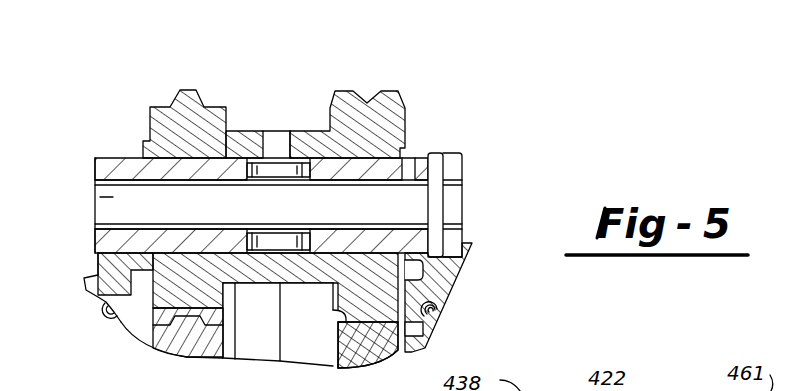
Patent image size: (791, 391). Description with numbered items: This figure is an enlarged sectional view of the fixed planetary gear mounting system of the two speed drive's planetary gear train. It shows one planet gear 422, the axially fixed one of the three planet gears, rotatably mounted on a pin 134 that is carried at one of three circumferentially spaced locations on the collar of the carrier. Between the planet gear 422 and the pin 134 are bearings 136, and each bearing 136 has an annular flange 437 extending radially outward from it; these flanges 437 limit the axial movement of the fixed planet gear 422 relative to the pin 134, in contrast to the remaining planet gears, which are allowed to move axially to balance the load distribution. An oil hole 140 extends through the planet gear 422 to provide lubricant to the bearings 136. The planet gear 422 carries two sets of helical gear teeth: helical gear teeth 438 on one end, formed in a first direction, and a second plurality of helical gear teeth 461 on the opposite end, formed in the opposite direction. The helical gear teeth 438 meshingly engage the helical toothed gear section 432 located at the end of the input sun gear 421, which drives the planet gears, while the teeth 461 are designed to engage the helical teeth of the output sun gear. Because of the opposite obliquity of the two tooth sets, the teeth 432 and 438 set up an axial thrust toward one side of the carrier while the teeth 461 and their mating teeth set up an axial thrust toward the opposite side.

The pin 134 is at (418, 202).
The bearings 136 is at (143, 153).
The oil hole 140 is at (271, 131).
The input sun gear 421 is at (203, 343).
The planet gear 422 is at (250, 131).
The helical toothed gear section 432 is at (185, 320).
The annular flange 437 is at (428, 147).
The helical gear teeth 438 is at (190, 88).
The helical gear teeth 461 is at (371, 103).